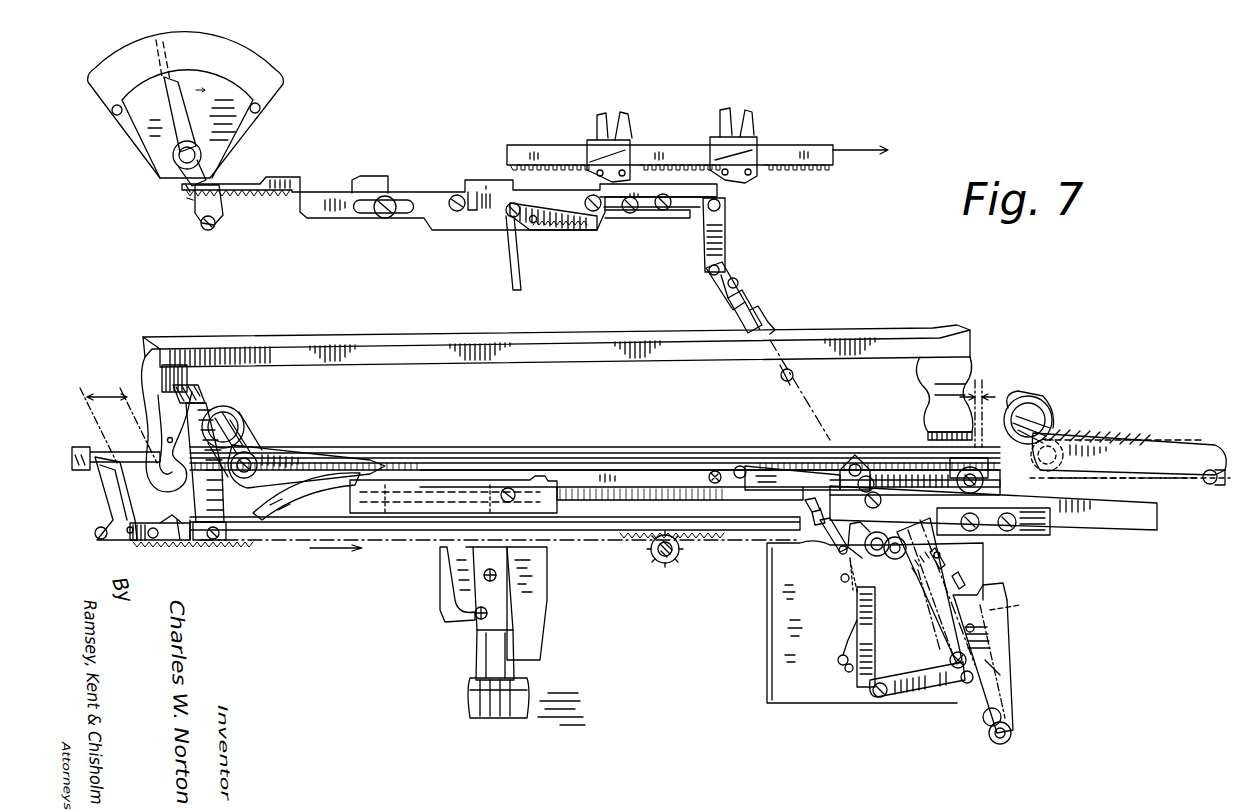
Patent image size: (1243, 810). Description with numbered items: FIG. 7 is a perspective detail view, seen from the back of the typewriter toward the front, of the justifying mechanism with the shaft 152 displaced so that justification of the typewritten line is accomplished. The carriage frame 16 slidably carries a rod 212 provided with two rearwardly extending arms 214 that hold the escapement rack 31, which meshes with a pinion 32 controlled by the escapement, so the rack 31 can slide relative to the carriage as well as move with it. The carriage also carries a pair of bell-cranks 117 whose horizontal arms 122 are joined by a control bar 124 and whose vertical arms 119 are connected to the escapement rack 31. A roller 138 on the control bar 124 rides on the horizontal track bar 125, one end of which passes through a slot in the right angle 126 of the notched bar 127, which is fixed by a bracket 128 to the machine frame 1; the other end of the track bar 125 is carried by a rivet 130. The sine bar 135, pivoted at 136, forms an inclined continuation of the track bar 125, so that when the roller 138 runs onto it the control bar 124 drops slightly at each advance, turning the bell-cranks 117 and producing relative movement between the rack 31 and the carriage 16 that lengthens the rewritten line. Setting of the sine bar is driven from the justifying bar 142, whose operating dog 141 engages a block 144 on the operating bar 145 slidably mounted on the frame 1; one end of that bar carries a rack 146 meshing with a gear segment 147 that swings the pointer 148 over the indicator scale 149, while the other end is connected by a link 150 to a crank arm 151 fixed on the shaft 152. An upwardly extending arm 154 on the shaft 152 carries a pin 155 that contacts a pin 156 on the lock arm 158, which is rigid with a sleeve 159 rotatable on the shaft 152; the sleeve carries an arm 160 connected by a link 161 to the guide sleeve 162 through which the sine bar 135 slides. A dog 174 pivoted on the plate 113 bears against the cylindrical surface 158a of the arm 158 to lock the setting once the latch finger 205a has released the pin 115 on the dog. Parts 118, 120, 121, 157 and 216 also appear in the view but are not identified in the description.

The machine frame 1 is at (370, 176).
The carriage 16 is at (392, 336).
The escapement rack 31 is at (628, 538).
The pinion 32 is at (660, 562).
The plate 113 is at (768, 655).
The pin 115 is at (840, 552).
The bell-cranks 117 is at (255, 428).
The bracket 118 is at (180, 462).
The vertical arms 119 is at (224, 500).
The pin 120 is at (210, 540).
The stop 121 is at (208, 542).
The horizontal arms 122 is at (290, 456).
The control bar 124 is at (898, 470).
The track bar 125 is at (660, 470).
The right angle 126 is at (340, 505).
The notched bar 127 is at (455, 478).
The bracket 128 is at (468, 556).
The rivet 130 is at (717, 470).
The sine bar 135 is at (1120, 520).
The pivot 136 is at (748, 468).
The roller 138 is at (990, 430).
The operating dog 141 is at (621, 160).
The justifying bar 142 is at (527, 147).
The block 144 is at (492, 210).
The operating bar 145 is at (425, 200).
The rack 146 is at (264, 193).
The gear segment 147 is at (192, 205).
The pointer 148 is at (172, 122).
The indicator scale 149 is at (252, 62).
The link 150 is at (688, 215).
The crank arm 151 is at (724, 220).
The shaft 152 is at (735, 278).
The arm 154 is at (985, 660).
The pin 155 is at (1007, 599).
The pin 156 is at (947, 563).
The pin 157 is at (965, 582).
The lock arm 158 is at (925, 615).
The cylindrical surface 158a is at (935, 535).
The sleeve 159 is at (962, 688).
The arm 160 is at (915, 700).
The link 161 is at (862, 666).
The guide sleeve 162 is at (852, 455).
The dog 174 is at (850, 572).
The latch finger 205a is at (806, 503).
The rod 212 is at (130, 450).
The rearwardly extending arms 214 is at (118, 497).
The slider 216 is at (745, 160).